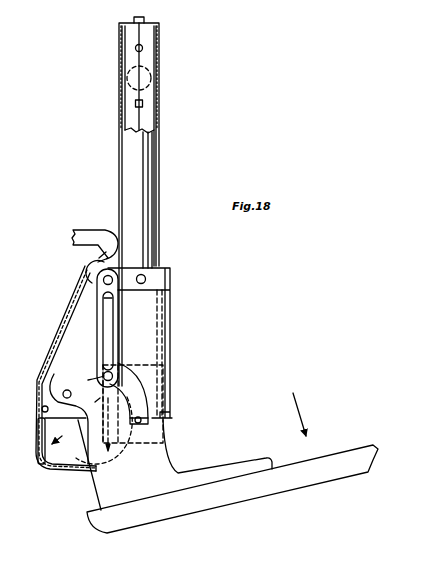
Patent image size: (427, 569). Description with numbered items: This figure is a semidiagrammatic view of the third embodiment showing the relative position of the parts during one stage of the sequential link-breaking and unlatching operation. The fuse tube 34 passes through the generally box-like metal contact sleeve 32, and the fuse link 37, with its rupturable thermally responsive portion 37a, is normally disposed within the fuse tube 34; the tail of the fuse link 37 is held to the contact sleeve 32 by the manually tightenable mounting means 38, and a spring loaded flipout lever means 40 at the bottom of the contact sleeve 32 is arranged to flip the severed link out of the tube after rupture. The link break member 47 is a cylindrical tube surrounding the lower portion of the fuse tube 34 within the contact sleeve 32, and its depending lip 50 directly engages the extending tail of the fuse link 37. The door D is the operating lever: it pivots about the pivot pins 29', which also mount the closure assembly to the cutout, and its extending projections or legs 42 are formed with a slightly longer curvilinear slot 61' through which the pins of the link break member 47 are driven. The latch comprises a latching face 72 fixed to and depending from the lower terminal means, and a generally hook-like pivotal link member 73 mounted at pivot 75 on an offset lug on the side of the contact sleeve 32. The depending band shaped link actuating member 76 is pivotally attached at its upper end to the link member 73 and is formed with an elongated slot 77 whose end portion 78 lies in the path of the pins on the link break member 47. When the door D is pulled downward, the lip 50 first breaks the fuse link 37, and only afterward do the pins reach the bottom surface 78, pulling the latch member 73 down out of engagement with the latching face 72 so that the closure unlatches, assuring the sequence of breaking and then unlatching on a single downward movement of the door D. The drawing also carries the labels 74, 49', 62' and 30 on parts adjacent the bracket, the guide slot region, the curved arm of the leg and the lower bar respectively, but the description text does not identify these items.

The rupturable thermally responsive portion 37a is at (130, 54).
The fuse tube 34 is at (124, 158).
The latching face 72 is at (108, 244).
The pivotal link member 73 is at (96, 264).
The contact sleeve 32 is at (77, 283).
The manually tightenable mounting means 38 is at (58, 326).
The pivot 75 is at (147, 280).
The bracket 74 is at (150, 290).
The depending band shaped link actuating member 76 is at (118, 322).
The elongated slot 77 is at (111, 340).
The pivot pins 29' is at (73, 429).
The extensions 42 is at (52, 392).
The end portion 78 is at (104, 382).
The spring loaded flipout lever means 40 is at (37, 431).
The pin 49' is at (89, 408).
The curved arm 62' is at (152, 390).
The curvilinear slot 61' is at (162, 408).
The link break member 47 is at (160, 419).
The fuse link 37 is at (60, 469).
The depending lip 50 is at (104, 466).
The bar 30 is at (181, 520).
The door D is at (348, 486).